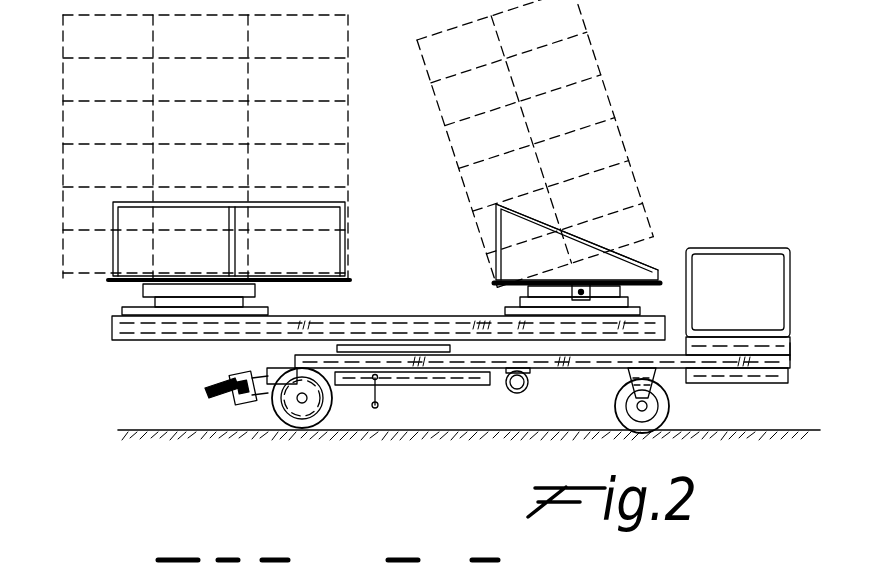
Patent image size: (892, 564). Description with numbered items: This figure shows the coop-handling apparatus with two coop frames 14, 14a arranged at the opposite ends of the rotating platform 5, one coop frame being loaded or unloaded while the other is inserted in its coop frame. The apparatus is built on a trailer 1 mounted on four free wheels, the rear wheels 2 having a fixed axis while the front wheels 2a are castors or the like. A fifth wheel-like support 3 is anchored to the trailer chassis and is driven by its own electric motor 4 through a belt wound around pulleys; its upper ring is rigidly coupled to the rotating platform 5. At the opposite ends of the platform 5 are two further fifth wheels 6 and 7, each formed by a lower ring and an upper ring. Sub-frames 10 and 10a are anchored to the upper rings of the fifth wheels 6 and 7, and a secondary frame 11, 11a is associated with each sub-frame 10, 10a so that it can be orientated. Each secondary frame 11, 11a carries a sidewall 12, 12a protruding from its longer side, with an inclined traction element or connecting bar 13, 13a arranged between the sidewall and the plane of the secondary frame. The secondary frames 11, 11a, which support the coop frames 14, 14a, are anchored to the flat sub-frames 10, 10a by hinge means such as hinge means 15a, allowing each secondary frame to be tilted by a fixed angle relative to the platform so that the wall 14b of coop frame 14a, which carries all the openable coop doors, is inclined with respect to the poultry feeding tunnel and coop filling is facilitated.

The trailer 1 is at (540, 383).
The rear wheels 2 is at (298, 430).
The front wheels 2a is at (632, 425).
The fifth wheel-like support 3 is at (415, 387).
The electric motor 4 is at (508, 390).
The rotating platform 5 is at (338, 318).
The fifth wheel 6 is at (185, 325).
The fifth wheel 7 is at (645, 333).
The sub-frame 10 is at (157, 293).
The sub-frame 10a is at (556, 312).
The secondary frame 11 is at (125, 282).
The secondary frame 11a is at (494, 284).
The sidewall 12 is at (259, 190).
The sidewall 12a is at (571, 231).
The inclined traction element or connecting bar 13 is at (348, 238).
The inclined traction element or connecting bar 13a is at (600, 240).
The coop frame 14 is at (332, 52).
The coop frame 14a is at (575, 25).
The wall 14b is at (620, 113).
The hinge means 15a is at (528, 290).